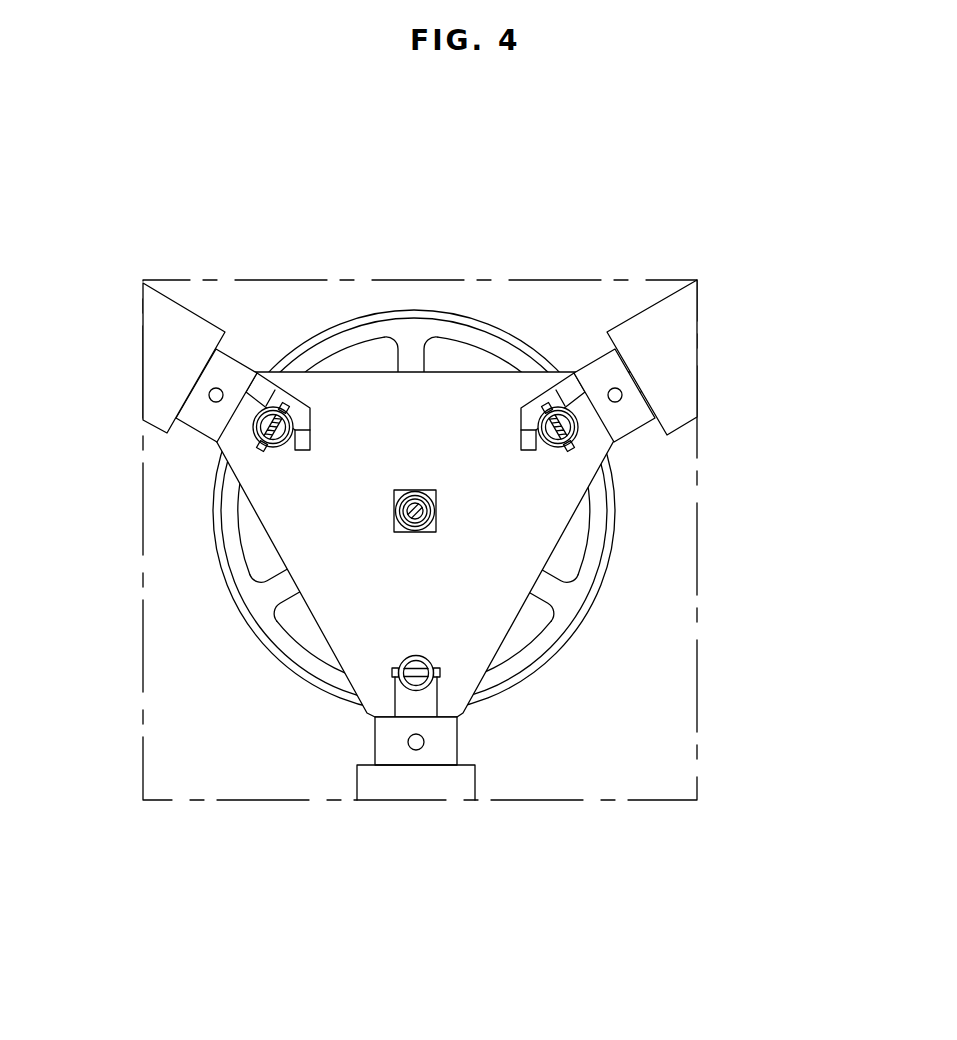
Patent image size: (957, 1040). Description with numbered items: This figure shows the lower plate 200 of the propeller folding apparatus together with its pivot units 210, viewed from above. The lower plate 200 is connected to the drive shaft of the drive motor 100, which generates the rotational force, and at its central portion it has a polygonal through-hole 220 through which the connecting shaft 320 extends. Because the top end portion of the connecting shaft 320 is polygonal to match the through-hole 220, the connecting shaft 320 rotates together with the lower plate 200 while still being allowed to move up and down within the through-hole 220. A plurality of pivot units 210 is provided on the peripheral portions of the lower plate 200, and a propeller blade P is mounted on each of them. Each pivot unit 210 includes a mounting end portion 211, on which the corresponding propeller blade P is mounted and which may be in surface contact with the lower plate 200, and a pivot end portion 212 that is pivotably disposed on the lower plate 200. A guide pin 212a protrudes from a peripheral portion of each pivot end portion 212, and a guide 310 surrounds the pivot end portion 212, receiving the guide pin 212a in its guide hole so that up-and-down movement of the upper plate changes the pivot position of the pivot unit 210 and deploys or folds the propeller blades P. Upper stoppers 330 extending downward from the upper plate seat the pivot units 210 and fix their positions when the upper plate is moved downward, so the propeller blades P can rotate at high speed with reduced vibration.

The drive motor 100 is at (487, 342).
The lower plate 200 is at (505, 565).
The pivot unit 210 is at (537, 428).
The mounting end portion 211 is at (232, 370).
The pivot end portion 212 is at (275, 388).
The guide pin 212a is at (265, 455).
The through-hole 220 is at (437, 497).
The guide 310 is at (567, 413).
The connecting shaft 320 is at (409, 532).
The upper stopper 330 is at (530, 433).
The propeller blade P is at (165, 358).